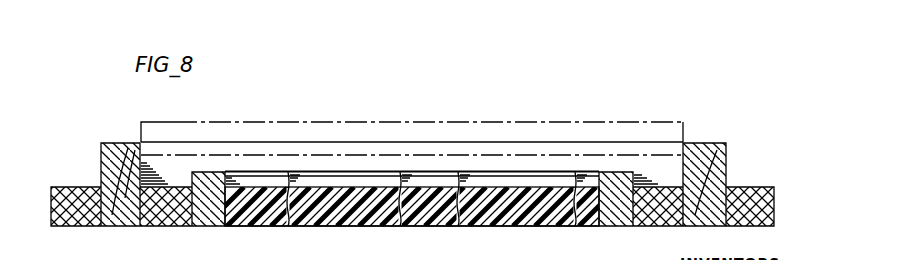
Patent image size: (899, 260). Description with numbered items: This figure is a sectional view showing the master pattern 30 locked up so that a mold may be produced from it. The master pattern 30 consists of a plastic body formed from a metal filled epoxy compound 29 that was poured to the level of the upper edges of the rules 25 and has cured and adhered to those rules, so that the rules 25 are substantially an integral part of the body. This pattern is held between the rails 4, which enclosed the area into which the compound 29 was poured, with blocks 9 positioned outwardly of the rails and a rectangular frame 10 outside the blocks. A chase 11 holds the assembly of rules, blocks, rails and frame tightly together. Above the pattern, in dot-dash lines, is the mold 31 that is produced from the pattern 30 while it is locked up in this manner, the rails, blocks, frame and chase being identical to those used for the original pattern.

The rails 4 is at (220, 226).
The blocks 9 is at (162, 226).
The rectangular frame 10 is at (108, 226).
The chase 11 is at (58, 226).
The rules 25 is at (451, 209).
The metal filled epoxy compound 29 is at (343, 222).
The master pattern 30 is at (543, 173).
The mold 31 is at (504, 122).